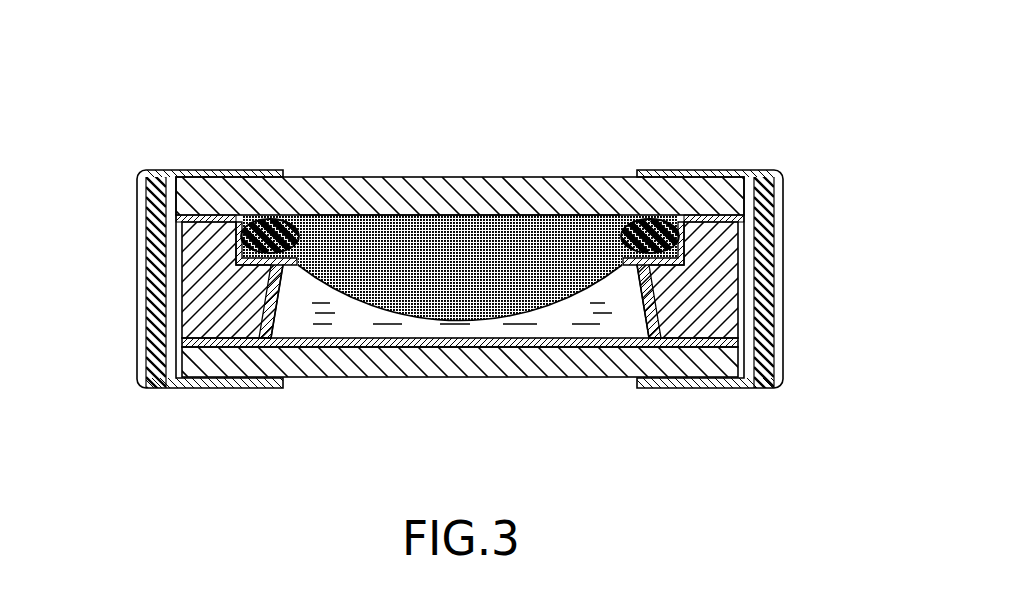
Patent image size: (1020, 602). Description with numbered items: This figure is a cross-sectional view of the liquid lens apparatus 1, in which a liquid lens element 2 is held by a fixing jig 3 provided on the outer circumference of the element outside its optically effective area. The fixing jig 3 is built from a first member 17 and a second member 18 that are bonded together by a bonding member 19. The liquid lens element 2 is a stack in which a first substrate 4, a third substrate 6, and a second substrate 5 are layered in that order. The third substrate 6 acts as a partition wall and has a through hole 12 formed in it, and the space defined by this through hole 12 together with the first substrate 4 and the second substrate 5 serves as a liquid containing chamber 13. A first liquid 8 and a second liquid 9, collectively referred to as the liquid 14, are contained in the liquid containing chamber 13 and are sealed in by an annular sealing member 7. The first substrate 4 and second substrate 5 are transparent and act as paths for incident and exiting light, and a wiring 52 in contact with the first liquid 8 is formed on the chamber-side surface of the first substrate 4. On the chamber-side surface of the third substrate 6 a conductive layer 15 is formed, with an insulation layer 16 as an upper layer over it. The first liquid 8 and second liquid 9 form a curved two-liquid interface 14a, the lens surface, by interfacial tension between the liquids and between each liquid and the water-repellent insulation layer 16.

The liquid lens apparatus 1 is at (788, 103).
The liquid lens element 2 is at (521, 152).
The fixing jig 3 is at (50, 213).
The first substrate 4 is at (452, 177).
The second substrate 5 is at (445, 365).
The third substrate 6 is at (228, 315).
The sealing member 7 is at (298, 176).
The first liquid 8 is at (358, 177).
The second liquid 9 is at (322, 177).
The through hole 12 is at (270, 302).
The liquid containing chamber 13 is at (548, 320).
The liquid 14 is at (388, 107).
The two-liquid interface 14a is at (590, 302).
The conductive layer 15 is at (198, 352).
The insulation layer 16 is at (350, 345).
The first member 17 is at (138, 234).
The second member 18 is at (139, 310).
The bonding member 19 is at (138, 272).
The wiring 52 is at (587, 177).